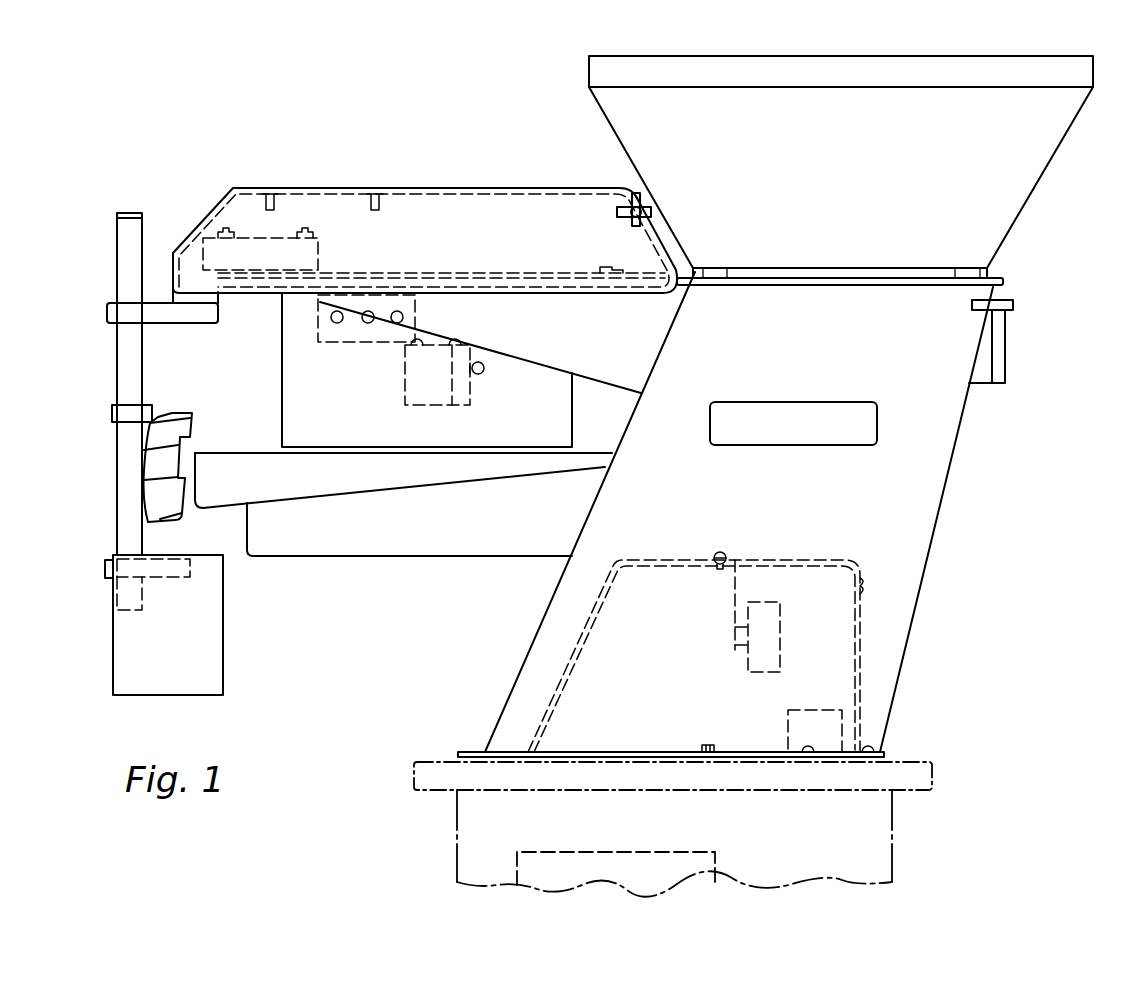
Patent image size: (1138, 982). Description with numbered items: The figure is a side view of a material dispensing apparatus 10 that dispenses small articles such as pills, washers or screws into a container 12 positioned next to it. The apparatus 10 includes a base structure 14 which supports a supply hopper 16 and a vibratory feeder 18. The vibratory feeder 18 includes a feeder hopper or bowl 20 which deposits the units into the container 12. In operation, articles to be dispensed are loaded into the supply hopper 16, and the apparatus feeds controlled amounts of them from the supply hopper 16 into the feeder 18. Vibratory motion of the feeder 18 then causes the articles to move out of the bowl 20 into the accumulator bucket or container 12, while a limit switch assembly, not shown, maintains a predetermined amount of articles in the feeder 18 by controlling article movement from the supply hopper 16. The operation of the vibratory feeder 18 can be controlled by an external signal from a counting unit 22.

The material dispensing apparatus 10 is at (957, 544).
The container 12 is at (225, 635).
The base structure 14 is at (708, 509).
The supply hopper 16 is at (826, 179).
The vibratory feeder 18 is at (367, 572).
The feeder hopper or bowl 20 is at (338, 488).
The counting unit 22 is at (192, 422).